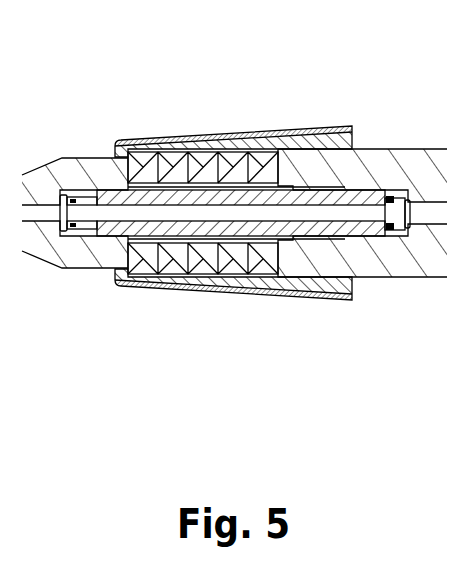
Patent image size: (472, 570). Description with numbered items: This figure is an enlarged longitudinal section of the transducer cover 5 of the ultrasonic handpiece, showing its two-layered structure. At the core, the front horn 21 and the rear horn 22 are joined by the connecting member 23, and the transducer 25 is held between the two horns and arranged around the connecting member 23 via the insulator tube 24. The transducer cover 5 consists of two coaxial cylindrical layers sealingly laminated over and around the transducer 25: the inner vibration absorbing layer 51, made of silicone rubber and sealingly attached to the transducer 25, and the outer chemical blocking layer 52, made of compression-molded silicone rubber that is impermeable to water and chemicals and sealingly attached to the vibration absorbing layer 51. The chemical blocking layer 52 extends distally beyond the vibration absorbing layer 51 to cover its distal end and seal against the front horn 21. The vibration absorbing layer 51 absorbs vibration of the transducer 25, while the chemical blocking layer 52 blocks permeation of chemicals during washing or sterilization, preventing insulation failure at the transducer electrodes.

The transducer cover 5 is at (246, 163).
The front horn 21 is at (60, 176).
The rear horn 22 is at (383, 156).
The connecting member 23 is at (283, 240).
The insulator tube 24 is at (270, 150).
The transducer 25 is at (172, 142).
The vibration absorbing layer 51 is at (297, 125).
The chemical blocking layer 52 is at (207, 128).